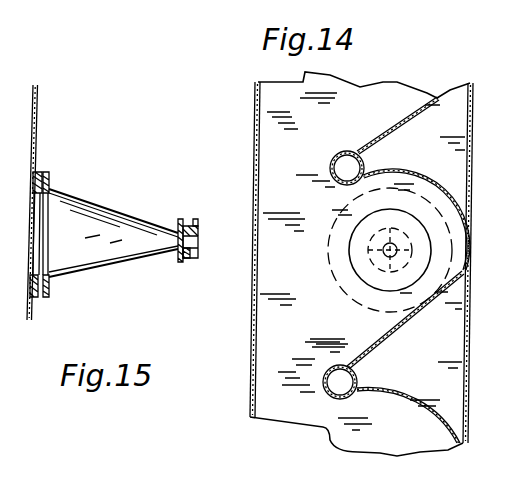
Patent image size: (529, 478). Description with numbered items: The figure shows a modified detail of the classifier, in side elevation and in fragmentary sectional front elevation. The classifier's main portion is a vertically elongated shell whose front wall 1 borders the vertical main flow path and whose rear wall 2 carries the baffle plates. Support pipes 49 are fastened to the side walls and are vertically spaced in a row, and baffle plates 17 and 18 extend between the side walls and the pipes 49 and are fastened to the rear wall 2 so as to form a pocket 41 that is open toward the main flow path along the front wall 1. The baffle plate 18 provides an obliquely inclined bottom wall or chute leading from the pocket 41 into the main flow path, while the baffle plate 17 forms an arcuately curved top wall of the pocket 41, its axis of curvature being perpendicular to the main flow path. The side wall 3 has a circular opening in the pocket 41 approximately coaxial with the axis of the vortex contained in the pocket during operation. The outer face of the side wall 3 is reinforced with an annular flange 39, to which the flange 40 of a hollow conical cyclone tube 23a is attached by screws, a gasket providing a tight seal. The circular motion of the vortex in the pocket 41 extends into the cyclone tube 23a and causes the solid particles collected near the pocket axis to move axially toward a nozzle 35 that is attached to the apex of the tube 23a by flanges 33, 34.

In FIG. 14, the front wall 1 is at (257, 128).
In FIG. 14, the rear wall 2 is at (472, 196).
In FIG. 15, the side wall 3 is at (33, 121).
In FIG. 14, the baffle plate 17 is at (428, 181).
In FIG. 14, the baffle plate 18 is at (393, 122).
In FIG. 14, the cyclone tube 23a is at (420, 233).
In FIG. 15, the cyclone tube 23a is at (112, 209).
In FIG. 14, the flange 33 is at (334, 264).
In FIG. 15, the flange 33 is at (180, 220).
In FIG. 15, the flange 34 is at (193, 258).
In FIG. 15, the nozzle 35 is at (186, 260).
In FIG. 14, the annular flange 39 is at (460, 264).
In FIG. 15, the annular flange 39 is at (38, 172).
In FIG. 15, the flange 40 is at (50, 177).
In FIG. 14, the pocket 41 is at (348, 329).
In FIG. 14, the support pipe 49 is at (330, 170).